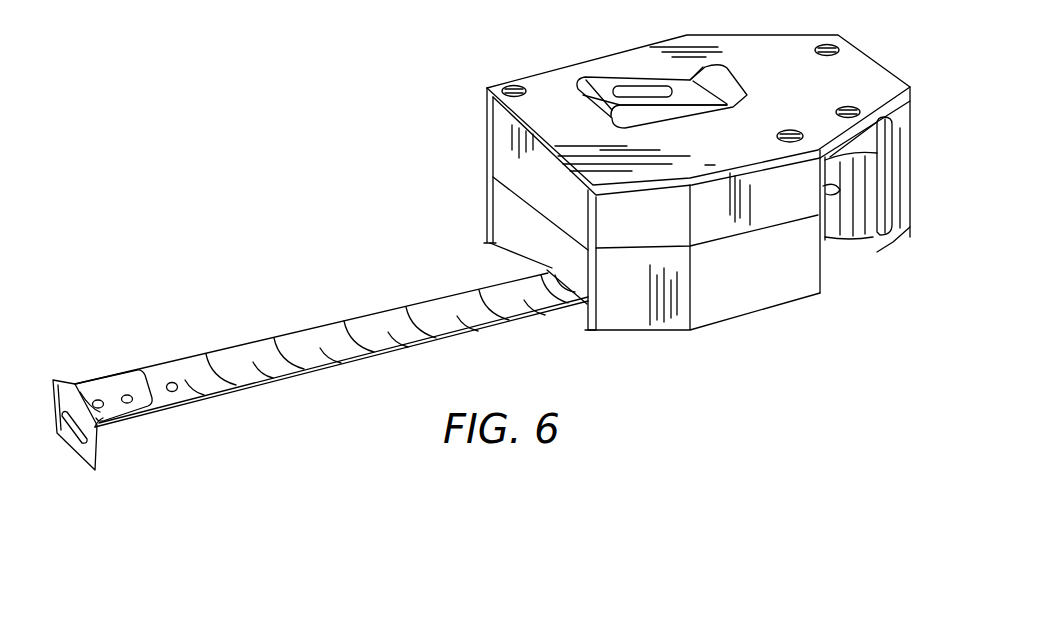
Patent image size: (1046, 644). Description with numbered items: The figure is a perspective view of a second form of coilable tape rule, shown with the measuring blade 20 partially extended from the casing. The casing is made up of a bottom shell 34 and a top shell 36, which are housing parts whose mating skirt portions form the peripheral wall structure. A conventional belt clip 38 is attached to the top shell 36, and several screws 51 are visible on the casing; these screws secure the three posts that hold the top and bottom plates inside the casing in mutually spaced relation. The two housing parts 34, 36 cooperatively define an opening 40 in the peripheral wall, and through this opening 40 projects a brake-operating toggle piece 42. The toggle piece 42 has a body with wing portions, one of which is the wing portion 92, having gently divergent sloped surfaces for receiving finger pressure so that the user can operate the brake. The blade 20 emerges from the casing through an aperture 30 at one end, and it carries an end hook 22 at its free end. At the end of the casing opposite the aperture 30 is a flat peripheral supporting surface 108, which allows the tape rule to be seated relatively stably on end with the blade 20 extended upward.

The blade 20 is at (336, 339).
The end hook 22 is at (90, 468).
The aperture 30 is at (558, 279).
The bottom shell 34 is at (717, 307).
The top shell 36 is at (770, 63).
The belt clip 38 is at (597, 87).
The opening 40 is at (823, 190).
The brake-operating toggle piece 42 is at (866, 245).
The screws 51 is at (505, 86).
The wing portion 92 is at (868, 153).
The flat peripheral supporting surface 108 is at (886, 64).